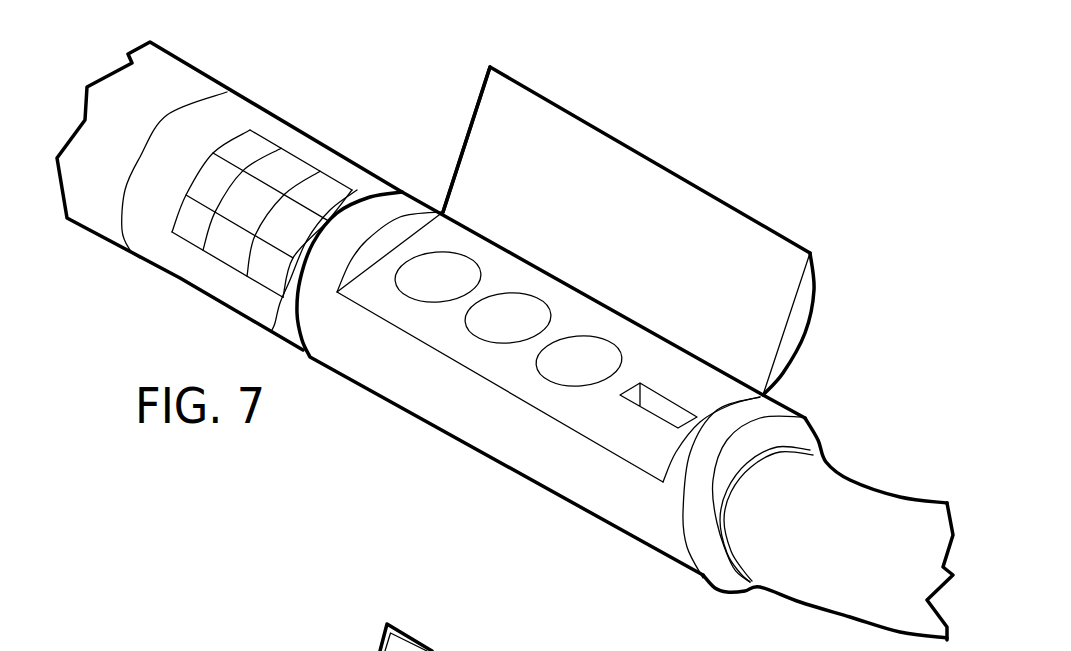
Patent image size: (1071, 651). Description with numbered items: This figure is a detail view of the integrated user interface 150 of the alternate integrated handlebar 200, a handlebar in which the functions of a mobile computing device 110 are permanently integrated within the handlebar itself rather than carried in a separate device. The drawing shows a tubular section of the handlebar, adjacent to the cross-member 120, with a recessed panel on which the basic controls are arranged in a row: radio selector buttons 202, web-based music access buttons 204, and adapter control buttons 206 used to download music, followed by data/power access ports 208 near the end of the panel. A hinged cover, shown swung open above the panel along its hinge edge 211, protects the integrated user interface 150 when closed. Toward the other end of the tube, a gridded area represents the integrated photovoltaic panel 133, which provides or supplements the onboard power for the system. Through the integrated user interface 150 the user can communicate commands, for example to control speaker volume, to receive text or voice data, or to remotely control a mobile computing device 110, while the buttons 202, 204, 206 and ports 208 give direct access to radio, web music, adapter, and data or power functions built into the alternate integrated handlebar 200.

The mobile computing device 110 is at (423, 464).
The cross-member 120 is at (180, 278).
The integrated photovoltaic panel 133 is at (338, 155).
The integrated user interface 150 is at (750, 257).
The alternate integrated handlebar 200 is at (777, 158).
The hinge edge 211 is at (480, 97).
The radio selector buttons 202 is at (452, 262).
The web-based music access buttons 204 is at (513, 302).
The adapter control buttons 206 is at (583, 343).
The data/power access ports 208 is at (657, 395).